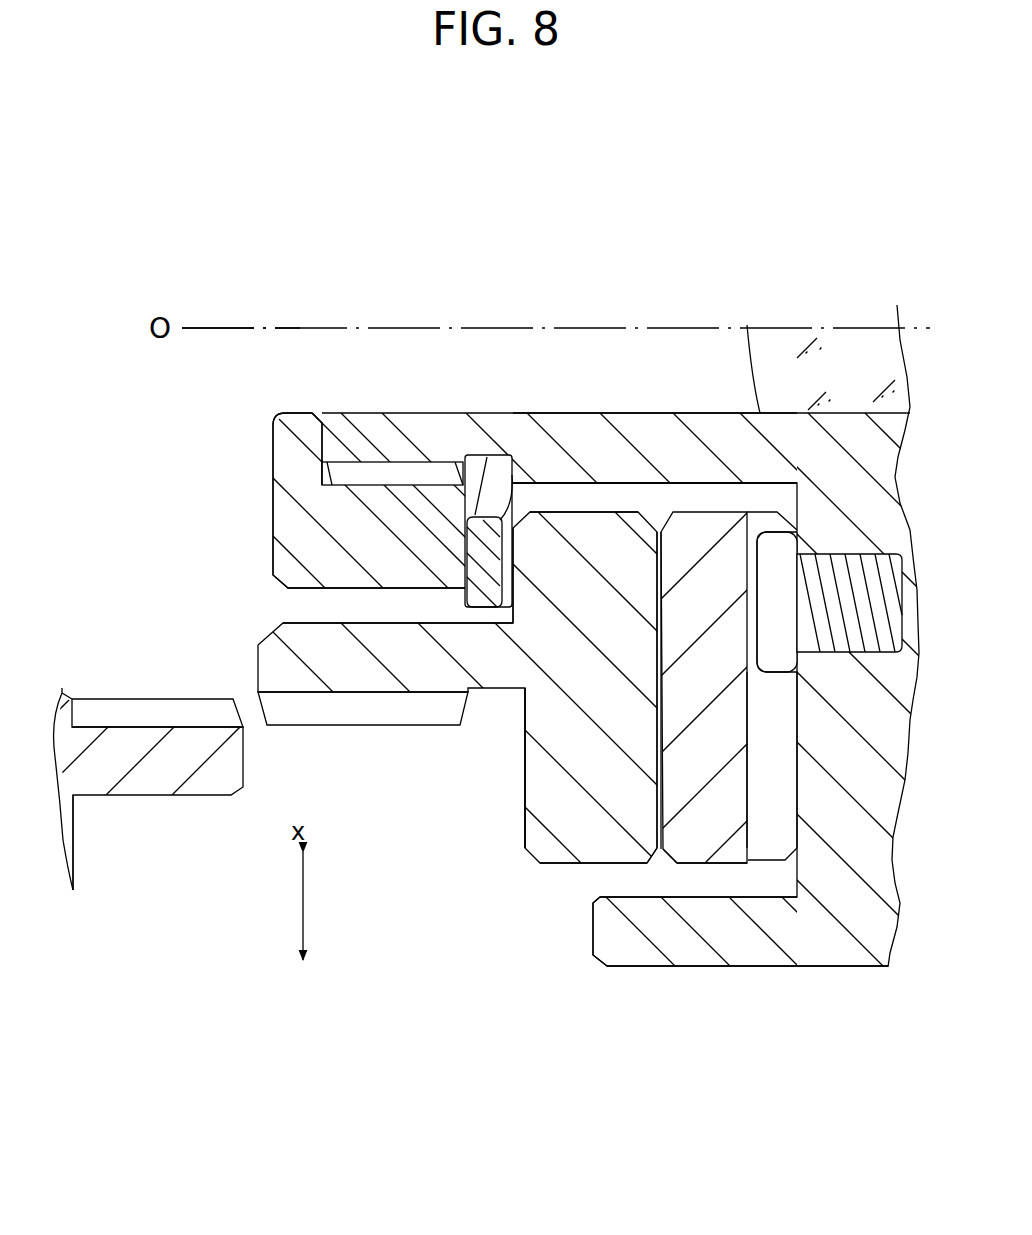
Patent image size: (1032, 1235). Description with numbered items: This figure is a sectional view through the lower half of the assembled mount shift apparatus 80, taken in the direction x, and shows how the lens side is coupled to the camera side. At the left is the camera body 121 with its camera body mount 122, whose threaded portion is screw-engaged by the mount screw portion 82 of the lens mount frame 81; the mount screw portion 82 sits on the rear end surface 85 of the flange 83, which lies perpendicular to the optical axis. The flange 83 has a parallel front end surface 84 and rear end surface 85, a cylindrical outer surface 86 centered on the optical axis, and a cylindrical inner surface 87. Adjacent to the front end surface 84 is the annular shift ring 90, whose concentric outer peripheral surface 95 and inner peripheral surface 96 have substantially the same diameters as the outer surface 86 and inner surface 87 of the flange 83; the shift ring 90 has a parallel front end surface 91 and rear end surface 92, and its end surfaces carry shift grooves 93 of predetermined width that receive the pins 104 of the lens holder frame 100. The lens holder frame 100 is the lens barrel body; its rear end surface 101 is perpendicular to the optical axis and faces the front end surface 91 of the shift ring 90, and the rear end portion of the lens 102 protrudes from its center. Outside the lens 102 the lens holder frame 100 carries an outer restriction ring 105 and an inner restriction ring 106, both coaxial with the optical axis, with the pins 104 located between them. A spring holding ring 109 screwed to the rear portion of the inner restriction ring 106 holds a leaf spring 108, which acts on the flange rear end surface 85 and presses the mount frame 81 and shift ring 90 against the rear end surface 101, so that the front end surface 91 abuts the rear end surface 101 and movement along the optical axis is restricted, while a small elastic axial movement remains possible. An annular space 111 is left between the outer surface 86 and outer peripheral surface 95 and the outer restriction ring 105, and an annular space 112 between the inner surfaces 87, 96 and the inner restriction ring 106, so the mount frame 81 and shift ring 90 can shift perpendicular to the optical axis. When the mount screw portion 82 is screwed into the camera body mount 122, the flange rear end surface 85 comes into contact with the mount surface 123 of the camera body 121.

The mount shift apparatus 80 is at (310, 306).
The lens mount frame 81 is at (378, 783).
The mount screw portion 82 is at (402, 723).
The flange 83 is at (521, 768).
The front end surface 84 is at (656, 777).
The rear end surface 85 is at (517, 617).
The cylindrical outer surface 86 is at (568, 866).
The cylindrical inner surface 87 is at (600, 512).
The shift ring 90 is at (663, 861).
The front end surface 91 is at (772, 760).
The rear end surface 92 is at (656, 655).
The shift grooves 93 is at (752, 843).
The outer peripheral surface 95 is at (712, 866).
The inner peripheral surface 96 is at (694, 514).
The lens holder frame 100 is at (763, 947).
The rear end surface 101 is at (791, 736).
The lens 102 is at (812, 340).
The pins 104 is at (777, 667).
The outer restriction ring 105 is at (668, 958).
The inner restriction ring 106 is at (557, 420).
The leaf spring 108 is at (465, 603).
The spring holding ring 109 is at (283, 545).
The annular space 111 is at (783, 886).
The annular space 112 is at (767, 488).
The camera body 121 is at (80, 827).
The camera body mount 122 is at (178, 712).
The mount surface 123 is at (73, 847).